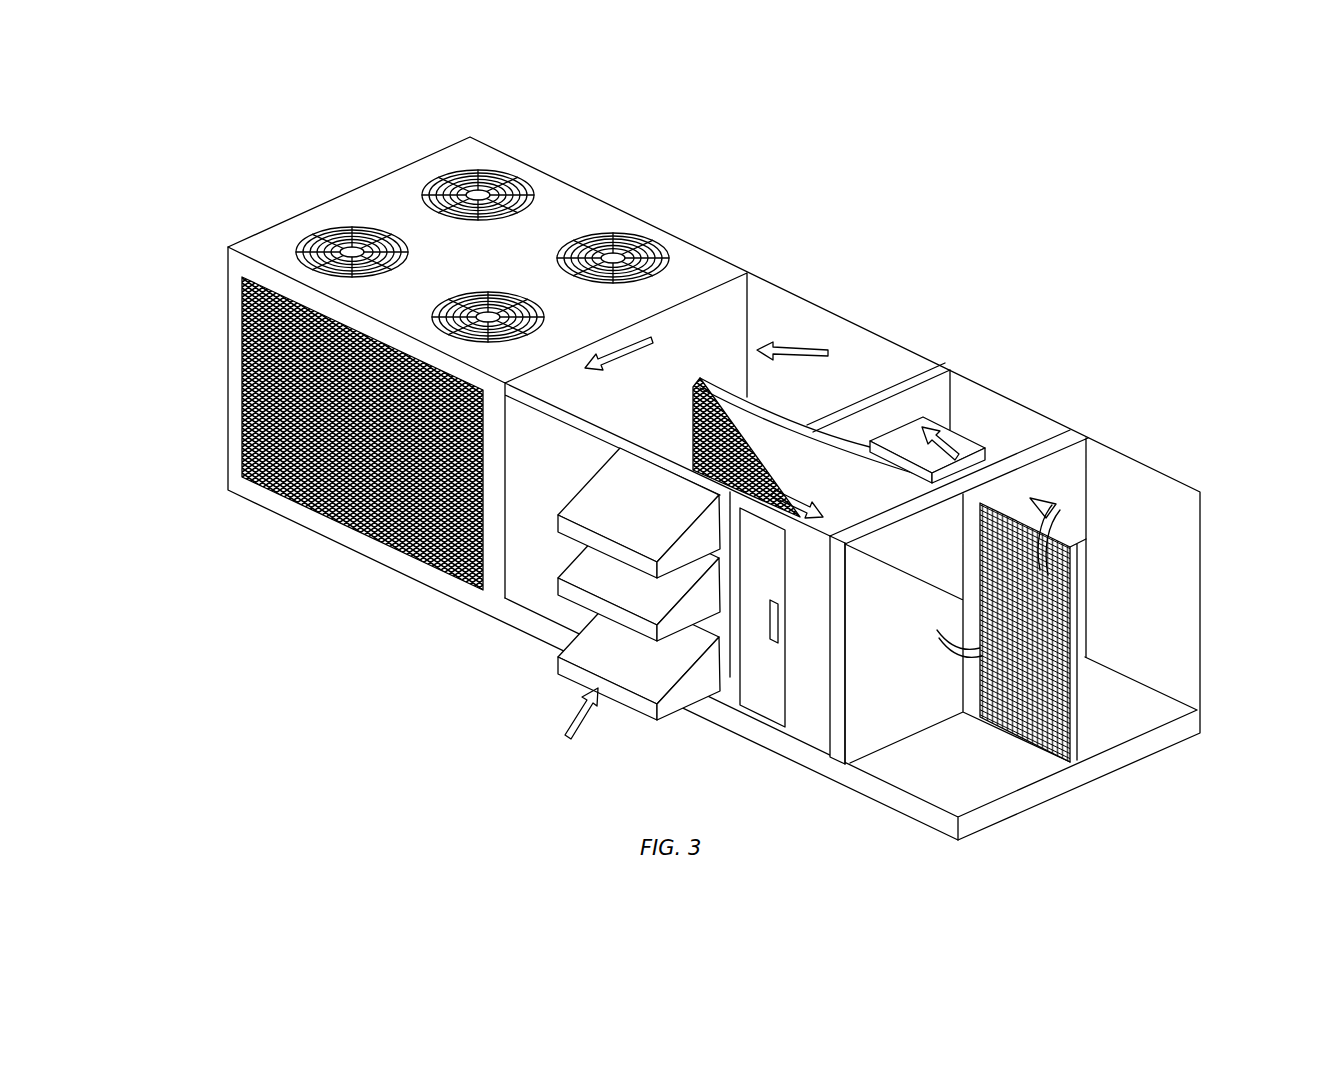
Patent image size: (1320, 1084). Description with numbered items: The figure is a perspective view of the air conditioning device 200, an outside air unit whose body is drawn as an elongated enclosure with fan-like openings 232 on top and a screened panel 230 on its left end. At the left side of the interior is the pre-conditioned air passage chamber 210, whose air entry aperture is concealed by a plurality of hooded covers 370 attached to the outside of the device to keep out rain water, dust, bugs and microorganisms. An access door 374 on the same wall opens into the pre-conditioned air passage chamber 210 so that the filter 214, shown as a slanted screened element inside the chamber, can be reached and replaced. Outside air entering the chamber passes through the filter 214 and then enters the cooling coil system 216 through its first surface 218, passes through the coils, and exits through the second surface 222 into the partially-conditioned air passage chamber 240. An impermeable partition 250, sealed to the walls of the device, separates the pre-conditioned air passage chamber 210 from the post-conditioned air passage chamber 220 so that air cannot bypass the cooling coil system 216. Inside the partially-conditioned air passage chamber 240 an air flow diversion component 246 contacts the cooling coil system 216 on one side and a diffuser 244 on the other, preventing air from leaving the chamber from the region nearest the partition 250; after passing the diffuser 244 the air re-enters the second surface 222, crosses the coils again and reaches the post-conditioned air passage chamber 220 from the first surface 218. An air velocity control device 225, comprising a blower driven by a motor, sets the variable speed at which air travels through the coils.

The air conditioning device 200 is at (253, 184).
The pre-conditioned air passage chamber 210 is at (837, 491).
The filter 214 is at (690, 403).
The cooling coil system 216 is at (1070, 428).
The first surface 218 is at (822, 752).
The post-conditioned air passage chamber 220 is at (979, 439).
The second surface 222 is at (853, 757).
The air velocity control device 225 is at (955, 443).
The fan section 230 is at (262, 247).
The fan 232 is at (667, 257).
The partially-conditioned air passage chamber 240 is at (972, 776).
The diffuser 244 is at (1083, 757).
The air flow diversion component 246 is at (967, 510).
The partition 250 is at (782, 413).
The hooded covers 370 is at (583, 647).
The access door 374 is at (773, 703).